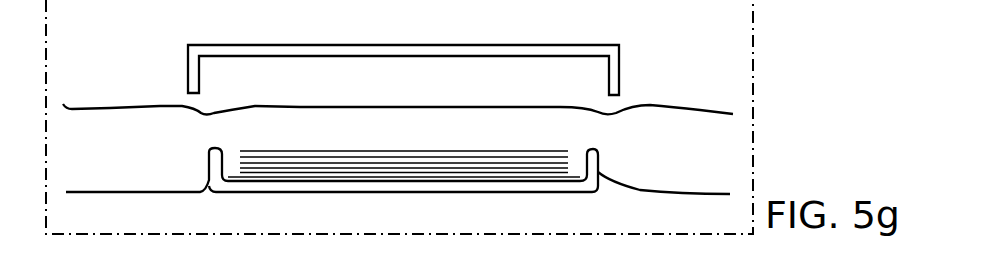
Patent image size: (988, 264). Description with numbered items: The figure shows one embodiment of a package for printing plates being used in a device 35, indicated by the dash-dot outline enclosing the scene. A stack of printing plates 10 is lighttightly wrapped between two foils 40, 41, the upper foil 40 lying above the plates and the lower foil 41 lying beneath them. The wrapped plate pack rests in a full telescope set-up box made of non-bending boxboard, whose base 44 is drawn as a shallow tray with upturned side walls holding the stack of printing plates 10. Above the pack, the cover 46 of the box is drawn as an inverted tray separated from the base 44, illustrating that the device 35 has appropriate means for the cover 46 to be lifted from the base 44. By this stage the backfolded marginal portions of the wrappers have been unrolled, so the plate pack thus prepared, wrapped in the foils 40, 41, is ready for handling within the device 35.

The stack of printing plates 10 is at (403, 160).
The device 35 is at (755, 87).
The foil 40 is at (700, 110).
The foil 41 is at (700, 158).
The base 44 is at (470, 192).
The cover 46 is at (418, 44).